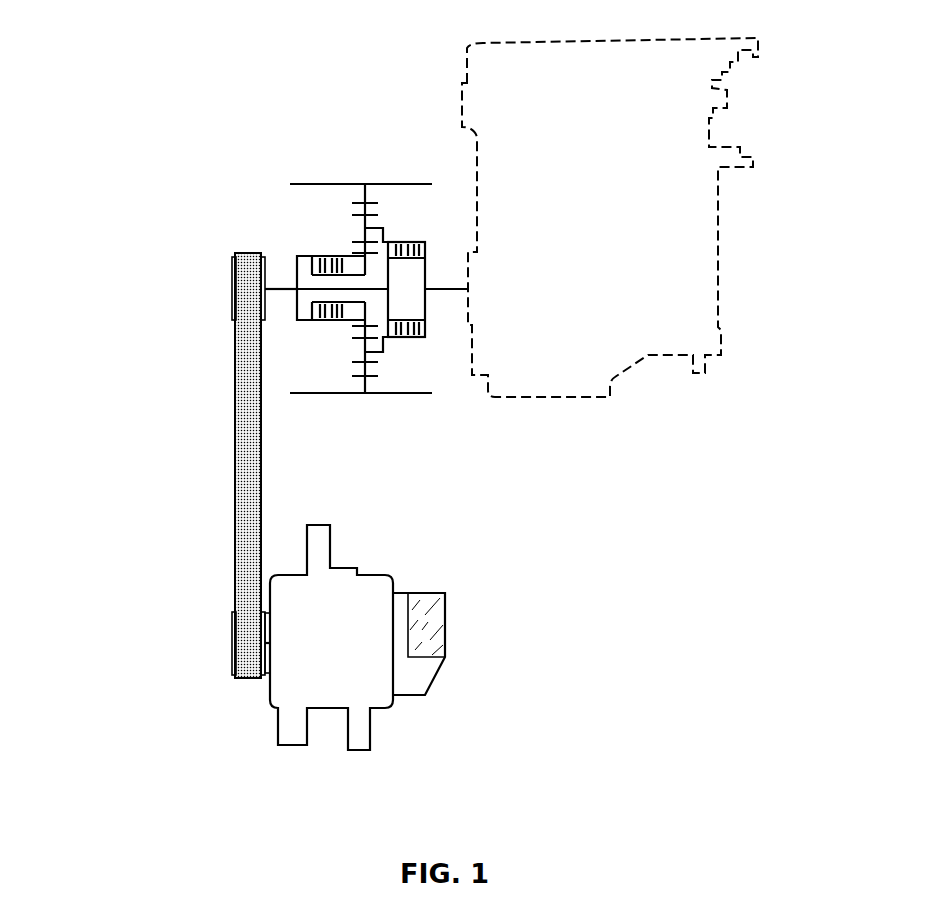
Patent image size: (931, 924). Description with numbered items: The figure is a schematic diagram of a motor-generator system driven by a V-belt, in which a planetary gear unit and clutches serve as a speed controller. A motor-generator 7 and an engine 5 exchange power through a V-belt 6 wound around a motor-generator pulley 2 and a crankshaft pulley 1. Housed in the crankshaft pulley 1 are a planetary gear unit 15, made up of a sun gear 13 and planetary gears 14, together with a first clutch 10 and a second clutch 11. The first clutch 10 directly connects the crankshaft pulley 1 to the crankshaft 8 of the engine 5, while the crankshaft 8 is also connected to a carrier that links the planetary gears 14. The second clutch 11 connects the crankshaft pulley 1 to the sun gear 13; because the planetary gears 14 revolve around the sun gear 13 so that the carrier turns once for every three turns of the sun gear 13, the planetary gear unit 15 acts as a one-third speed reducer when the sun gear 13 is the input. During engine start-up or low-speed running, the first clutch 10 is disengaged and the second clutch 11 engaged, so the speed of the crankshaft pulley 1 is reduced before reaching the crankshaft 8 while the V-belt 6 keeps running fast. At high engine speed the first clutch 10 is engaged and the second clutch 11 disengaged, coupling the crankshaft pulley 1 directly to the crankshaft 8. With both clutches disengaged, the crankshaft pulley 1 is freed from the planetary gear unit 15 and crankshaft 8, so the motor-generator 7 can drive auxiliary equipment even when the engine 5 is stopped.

The crankshaft pulley 1 is at (228, 290).
The motor-generator pulley 2 is at (229, 636).
The engine 5 is at (665, 355).
The V-belt 6 is at (250, 442).
The motor-generator 7 is at (395, 705).
The crankshaft 8 is at (450, 287).
The first clutch 10 is at (425, 328).
The second clutch 11 is at (308, 266).
The sun gear 13 is at (360, 262).
The planetary gears 14 is at (363, 232).
The planetary gear unit 15 is at (367, 108).